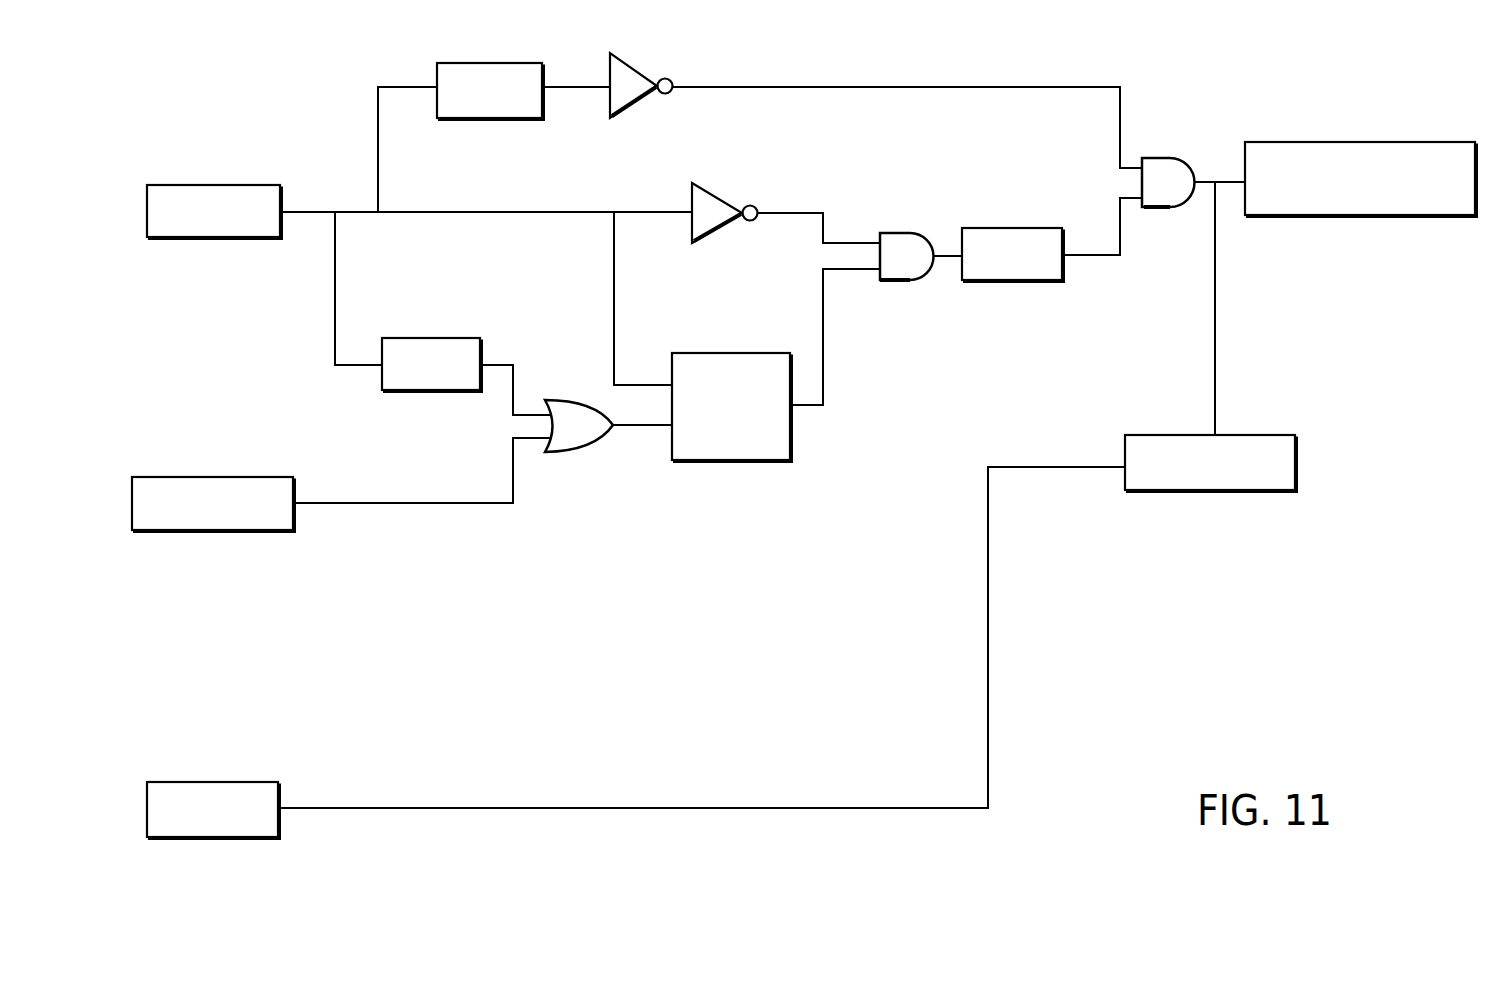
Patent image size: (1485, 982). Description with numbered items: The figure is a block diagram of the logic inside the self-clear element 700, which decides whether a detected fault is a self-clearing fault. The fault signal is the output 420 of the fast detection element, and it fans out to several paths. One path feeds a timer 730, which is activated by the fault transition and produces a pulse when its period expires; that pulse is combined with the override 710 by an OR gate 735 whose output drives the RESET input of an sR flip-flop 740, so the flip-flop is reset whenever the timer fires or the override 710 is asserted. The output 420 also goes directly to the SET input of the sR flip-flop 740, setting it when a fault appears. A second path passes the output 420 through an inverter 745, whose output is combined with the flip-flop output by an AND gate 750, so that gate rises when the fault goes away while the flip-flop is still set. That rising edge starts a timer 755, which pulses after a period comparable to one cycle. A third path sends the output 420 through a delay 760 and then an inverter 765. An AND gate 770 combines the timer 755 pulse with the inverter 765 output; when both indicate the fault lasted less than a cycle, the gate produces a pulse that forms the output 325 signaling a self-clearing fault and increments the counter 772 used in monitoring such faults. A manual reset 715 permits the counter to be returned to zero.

The output of fast detection element 420 is at (216, 185).
The delay 760 is at (490, 120).
The inverter 765 is at (637, 103).
The inverter 745 is at (721, 228).
The AND gate 750 is at (903, 282).
The timer 755 is at (1003, 228).
The AND gate 770 is at (1162, 158).
The output of the self-clear element 325 is at (1366, 218).
The timer 730 is at (427, 338).
The OR gate 735 is at (574, 453).
The sR flip-flop 740 is at (740, 463).
The override 710 is at (216, 477).
The manual reset 715 is at (215, 782).
The counter 772 is at (1248, 435).
The self-clear element 700 is at (1290, 613).